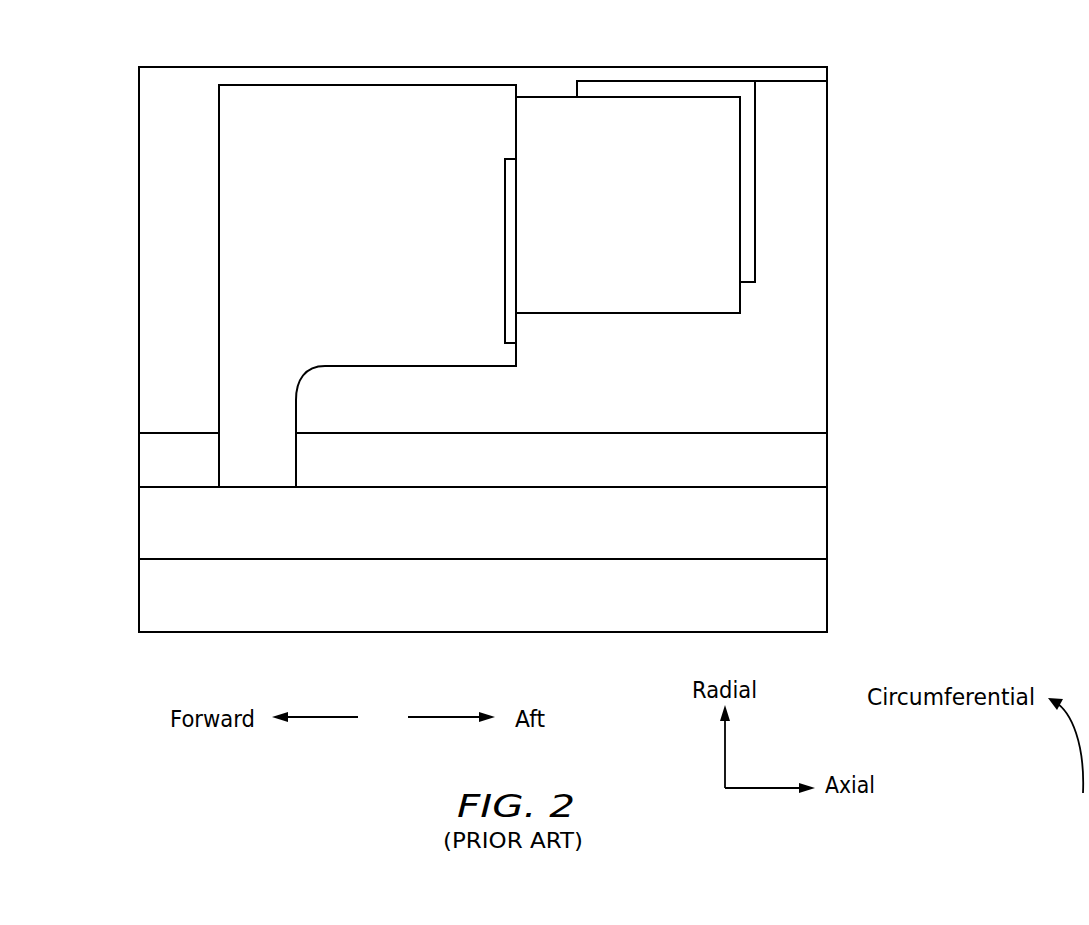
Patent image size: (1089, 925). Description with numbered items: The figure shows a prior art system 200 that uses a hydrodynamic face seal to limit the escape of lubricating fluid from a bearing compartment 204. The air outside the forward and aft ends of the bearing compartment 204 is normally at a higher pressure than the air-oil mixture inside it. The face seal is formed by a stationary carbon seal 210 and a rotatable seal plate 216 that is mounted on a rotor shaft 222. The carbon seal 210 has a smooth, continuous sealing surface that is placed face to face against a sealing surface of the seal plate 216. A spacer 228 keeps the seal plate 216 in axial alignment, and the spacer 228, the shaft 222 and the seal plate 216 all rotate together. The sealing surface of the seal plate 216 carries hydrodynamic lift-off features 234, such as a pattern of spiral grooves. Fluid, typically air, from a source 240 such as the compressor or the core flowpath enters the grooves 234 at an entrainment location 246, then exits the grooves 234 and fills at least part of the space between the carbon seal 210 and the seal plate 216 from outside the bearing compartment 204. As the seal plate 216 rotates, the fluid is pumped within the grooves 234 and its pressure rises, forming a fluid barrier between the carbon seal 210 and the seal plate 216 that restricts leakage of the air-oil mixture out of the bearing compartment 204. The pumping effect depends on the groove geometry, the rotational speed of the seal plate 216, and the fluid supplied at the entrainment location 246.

The system 200 is at (950, 96).
The bearing compartment 204 is at (172, 103).
The carbon seal 210 is at (714, 215).
The seal plate 216 is at (272, 243).
The rotor shaft 222 is at (213, 540).
The spacer 228 is at (583, 470).
The hydrodynamic features 234 is at (517, 290).
The source of fluid 240 is at (778, 403).
The entrainment location 246 is at (508, 333).